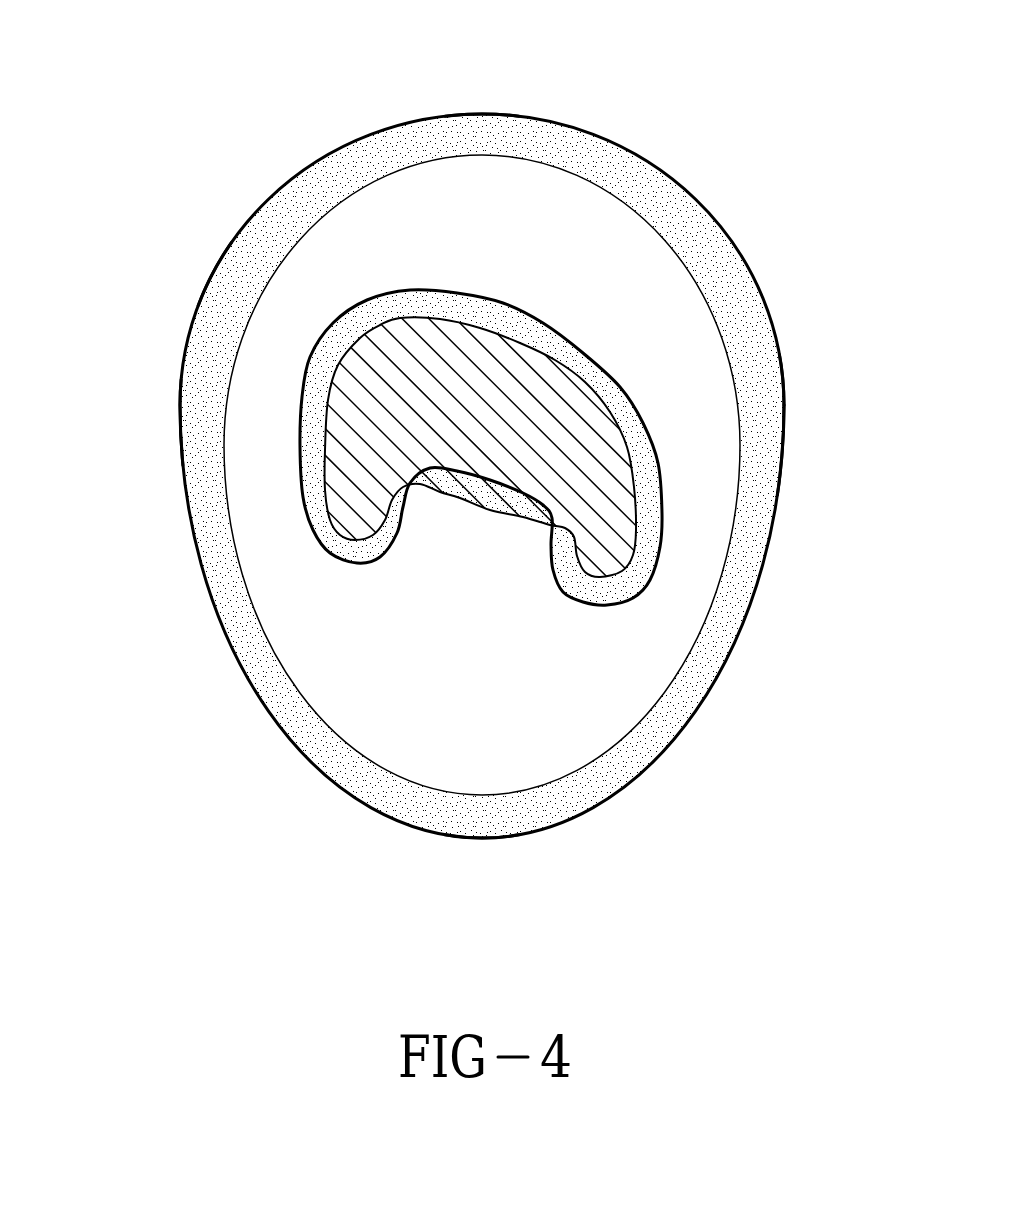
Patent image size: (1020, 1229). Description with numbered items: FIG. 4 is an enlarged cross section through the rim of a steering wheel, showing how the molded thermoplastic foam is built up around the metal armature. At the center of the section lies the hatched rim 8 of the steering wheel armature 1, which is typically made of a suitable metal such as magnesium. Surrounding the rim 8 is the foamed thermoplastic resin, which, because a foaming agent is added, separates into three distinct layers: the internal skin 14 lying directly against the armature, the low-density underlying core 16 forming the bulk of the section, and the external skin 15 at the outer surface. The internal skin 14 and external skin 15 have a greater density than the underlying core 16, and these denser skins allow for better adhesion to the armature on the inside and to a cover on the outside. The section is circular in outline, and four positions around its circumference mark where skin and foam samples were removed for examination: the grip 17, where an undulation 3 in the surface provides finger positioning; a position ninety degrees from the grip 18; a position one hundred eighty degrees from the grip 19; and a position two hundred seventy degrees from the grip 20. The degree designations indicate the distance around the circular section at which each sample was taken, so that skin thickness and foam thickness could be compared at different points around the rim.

The steering wheel armature 1 is at (597, 530).
The undulation 3 is at (783, 480).
The rim 8 is at (213, 273).
The internal skin 14 is at (573, 350).
The external skin 15 is at (623, 173).
The underlying core 16 is at (345, 242).
The grip 17 is at (783, 387).
The 90° from grip 18 is at (474, 113).
The 180° from grip 19 is at (180, 463).
The 270° from grip 20 is at (480, 838).